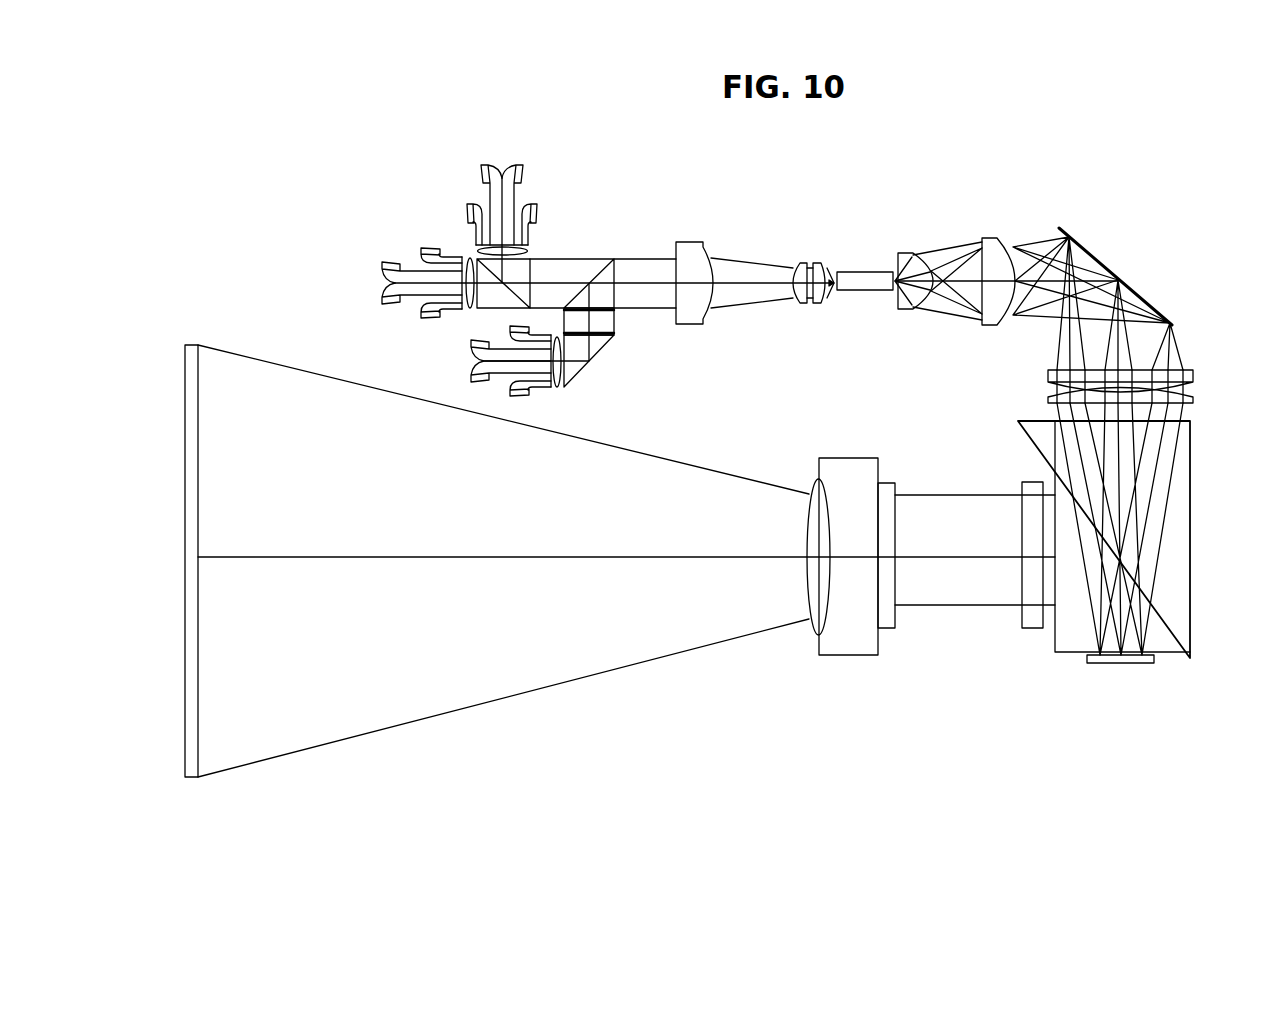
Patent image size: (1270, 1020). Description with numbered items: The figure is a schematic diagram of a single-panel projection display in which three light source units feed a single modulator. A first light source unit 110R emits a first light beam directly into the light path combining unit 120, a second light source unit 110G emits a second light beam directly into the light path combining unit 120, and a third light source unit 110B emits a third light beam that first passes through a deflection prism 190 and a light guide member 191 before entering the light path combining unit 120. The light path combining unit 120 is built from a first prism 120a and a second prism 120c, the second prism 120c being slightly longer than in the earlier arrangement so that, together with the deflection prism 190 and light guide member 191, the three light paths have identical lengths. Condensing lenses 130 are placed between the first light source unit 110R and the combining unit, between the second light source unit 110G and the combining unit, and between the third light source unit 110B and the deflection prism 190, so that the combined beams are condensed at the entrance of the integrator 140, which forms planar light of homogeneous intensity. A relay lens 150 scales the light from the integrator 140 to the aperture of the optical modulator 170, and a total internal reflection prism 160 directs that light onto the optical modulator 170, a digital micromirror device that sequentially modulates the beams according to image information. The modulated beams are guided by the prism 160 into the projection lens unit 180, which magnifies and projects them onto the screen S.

The first light source unit 110R is at (520, 203).
The second light source unit 110G is at (412, 275).
The third light source unit 110B is at (513, 380).
The condensing lens 130 is at (483, 254).
The light path combining unit 120 is at (562, 239).
The first prism 120a is at (533, 258).
The second prism 120c is at (592, 259).
The light guide member 191 is at (615, 322).
The deflection prism 190 is at (590, 362).
The integrator 140 is at (858, 291).
The relay lens 150 is at (1045, 199).
The total internal reflection prism 160 is at (1190, 545).
The optical modulator 170 is at (1137, 663).
The projection lens unit 180 is at (1043, 680).
The screen S is at (185, 742).